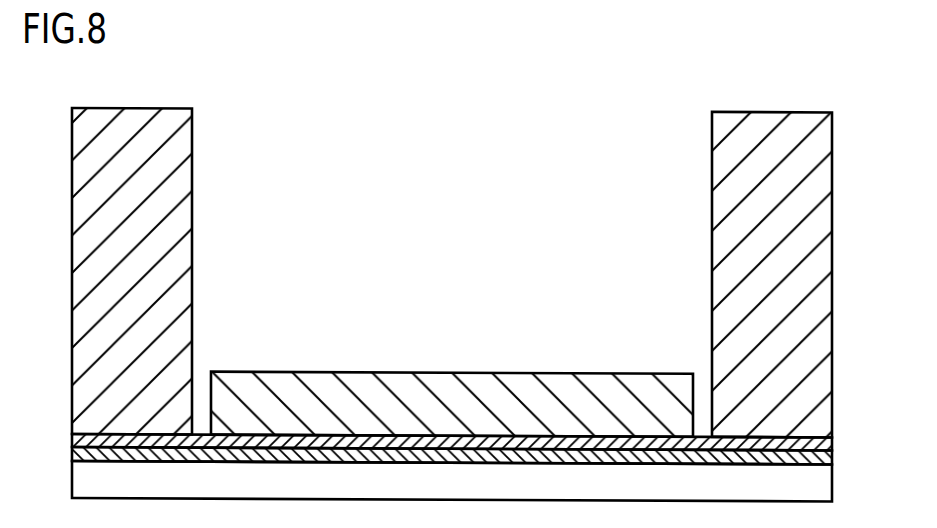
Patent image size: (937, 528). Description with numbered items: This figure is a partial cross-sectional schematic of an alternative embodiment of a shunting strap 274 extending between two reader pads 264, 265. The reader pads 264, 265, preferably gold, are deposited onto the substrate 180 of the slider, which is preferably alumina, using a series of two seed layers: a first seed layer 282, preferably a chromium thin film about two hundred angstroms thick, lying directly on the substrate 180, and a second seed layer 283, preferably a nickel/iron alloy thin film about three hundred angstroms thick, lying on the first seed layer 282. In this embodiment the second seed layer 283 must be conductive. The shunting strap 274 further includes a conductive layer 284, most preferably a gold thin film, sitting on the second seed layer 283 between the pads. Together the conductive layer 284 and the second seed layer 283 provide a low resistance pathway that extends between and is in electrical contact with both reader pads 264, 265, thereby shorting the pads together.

The reader pad 264 is at (173, 127).
The reader pad 265 is at (723, 125).
The shunting strap 274 is at (443, 292).
The conductive layer 284 is at (587, 380).
The second seed layer 283 is at (828, 440).
The first seed layer 282 is at (827, 455).
The substrate 180 is at (827, 470).